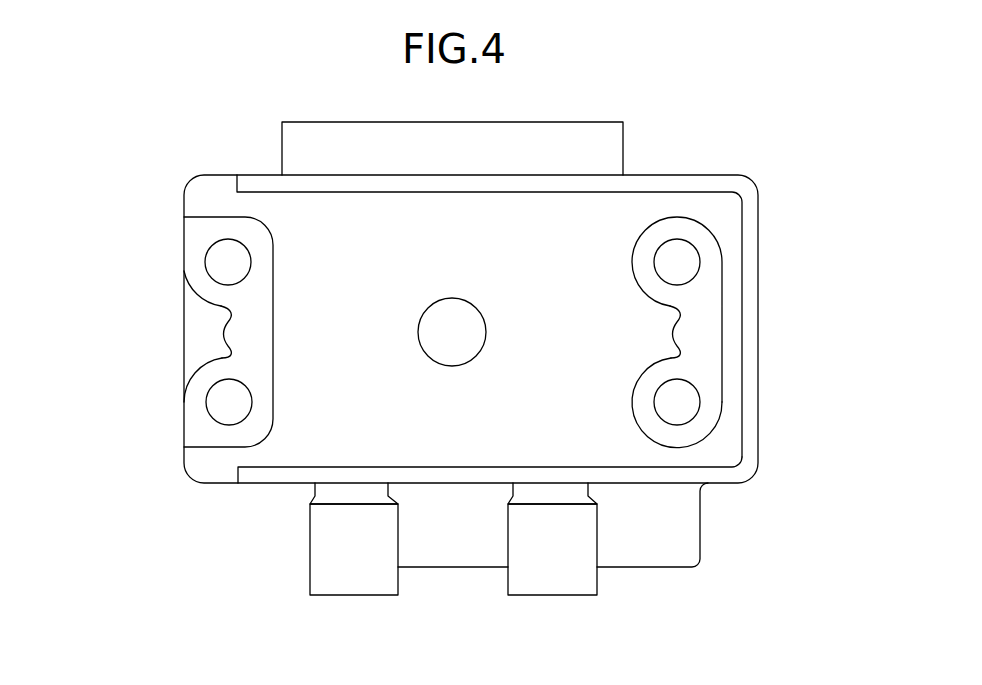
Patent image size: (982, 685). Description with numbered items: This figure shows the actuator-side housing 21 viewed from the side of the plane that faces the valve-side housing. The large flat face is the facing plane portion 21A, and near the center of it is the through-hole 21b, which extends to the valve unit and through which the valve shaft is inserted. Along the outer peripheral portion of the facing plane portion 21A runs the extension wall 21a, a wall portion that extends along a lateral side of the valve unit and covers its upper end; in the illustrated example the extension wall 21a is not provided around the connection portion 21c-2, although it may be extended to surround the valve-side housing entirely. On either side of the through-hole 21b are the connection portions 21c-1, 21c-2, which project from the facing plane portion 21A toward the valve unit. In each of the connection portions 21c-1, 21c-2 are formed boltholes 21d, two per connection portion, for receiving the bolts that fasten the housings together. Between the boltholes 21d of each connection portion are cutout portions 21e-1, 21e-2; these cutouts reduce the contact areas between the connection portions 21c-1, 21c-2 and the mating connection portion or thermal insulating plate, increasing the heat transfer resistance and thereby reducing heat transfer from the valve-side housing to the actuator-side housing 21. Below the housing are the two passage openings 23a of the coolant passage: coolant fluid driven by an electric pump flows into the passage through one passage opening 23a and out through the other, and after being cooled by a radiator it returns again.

The actuator-side housing 21 is at (771, 208).
The extension wall 21a is at (733, 175).
The facing plane portion 21A is at (277, 447).
The through-hole 21b is at (458, 328).
The connection portion 21c-1 is at (703, 318).
The connection portion 21c-2 is at (243, 332).
The bolthole 21d is at (223, 258).
The cutout portion 21e-1 is at (663, 332).
The cutout portion 21e-2 is at (218, 342).
The passage opening 23a is at (352, 575).